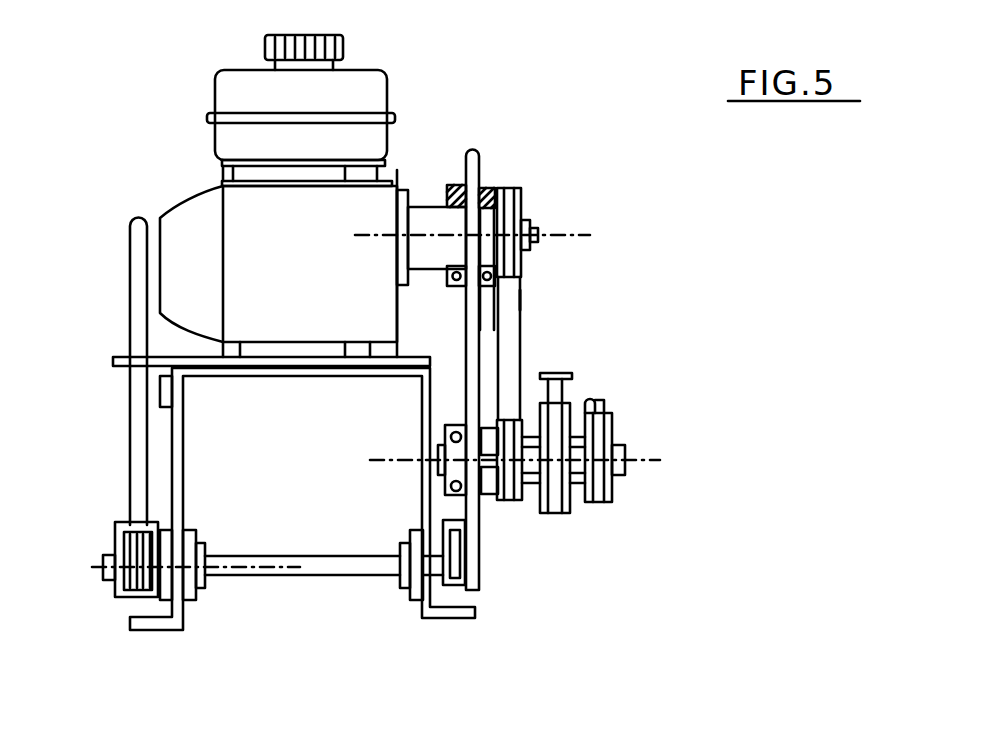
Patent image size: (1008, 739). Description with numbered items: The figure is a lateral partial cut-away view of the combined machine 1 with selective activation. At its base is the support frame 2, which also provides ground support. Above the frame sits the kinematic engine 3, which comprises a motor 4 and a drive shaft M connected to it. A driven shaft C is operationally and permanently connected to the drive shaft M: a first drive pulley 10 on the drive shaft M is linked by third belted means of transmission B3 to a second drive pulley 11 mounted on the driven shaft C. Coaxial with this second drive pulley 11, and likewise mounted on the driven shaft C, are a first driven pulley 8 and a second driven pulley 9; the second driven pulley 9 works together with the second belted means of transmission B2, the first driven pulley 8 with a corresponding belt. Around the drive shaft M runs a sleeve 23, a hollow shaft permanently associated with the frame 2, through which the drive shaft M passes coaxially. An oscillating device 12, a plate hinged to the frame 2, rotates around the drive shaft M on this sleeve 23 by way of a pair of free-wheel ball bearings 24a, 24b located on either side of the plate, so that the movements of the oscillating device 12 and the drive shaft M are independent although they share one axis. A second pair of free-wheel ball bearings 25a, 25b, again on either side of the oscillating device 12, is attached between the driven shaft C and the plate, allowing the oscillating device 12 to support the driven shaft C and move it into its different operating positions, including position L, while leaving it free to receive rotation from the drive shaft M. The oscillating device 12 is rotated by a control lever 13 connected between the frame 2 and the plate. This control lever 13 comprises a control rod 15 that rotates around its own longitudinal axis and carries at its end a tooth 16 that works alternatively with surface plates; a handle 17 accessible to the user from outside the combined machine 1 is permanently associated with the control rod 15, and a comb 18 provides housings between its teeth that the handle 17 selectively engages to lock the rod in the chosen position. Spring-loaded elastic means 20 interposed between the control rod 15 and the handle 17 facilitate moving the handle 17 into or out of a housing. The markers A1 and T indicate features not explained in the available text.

The combined machine 1 is at (594, 128).
The support frame 2 is at (352, 370).
The kinematic engine 3 is at (551, 328).
The motor 4 is at (372, 95).
The first driven pulley 8 is at (612, 480).
The second driven pulley 9 is at (570, 505).
The first drive pulley 10 is at (521, 190).
The second drive pulley 11 is at (520, 505).
The oscillating device 12 is at (471, 150).
The control lever 13 is at (319, 606).
The control rod 15 is at (262, 570).
The tooth 16 is at (460, 550).
The handle 17 is at (138, 442).
The comb 18 is at (125, 358).
The spring-loaded elastic means 20 is at (140, 592).
The sleeve 23 is at (432, 255).
The free-wheel ball bearing 24a is at (455, 188).
The free-wheel ball bearing 24b is at (488, 186).
The free-wheel ball bearing 25a is at (452, 440).
The free-wheel ball bearing 25b is at (468, 412).
The axis end cap A1 is at (606, 408).
The second belted means of transmission B2 is at (562, 388).
The third belted means of transmission B3 is at (521, 300).
The driven shaft C is at (616, 446).
The operating position L is at (475, 175).
The drive shaft M is at (537, 226).
The transmission direction T is at (501, 556).